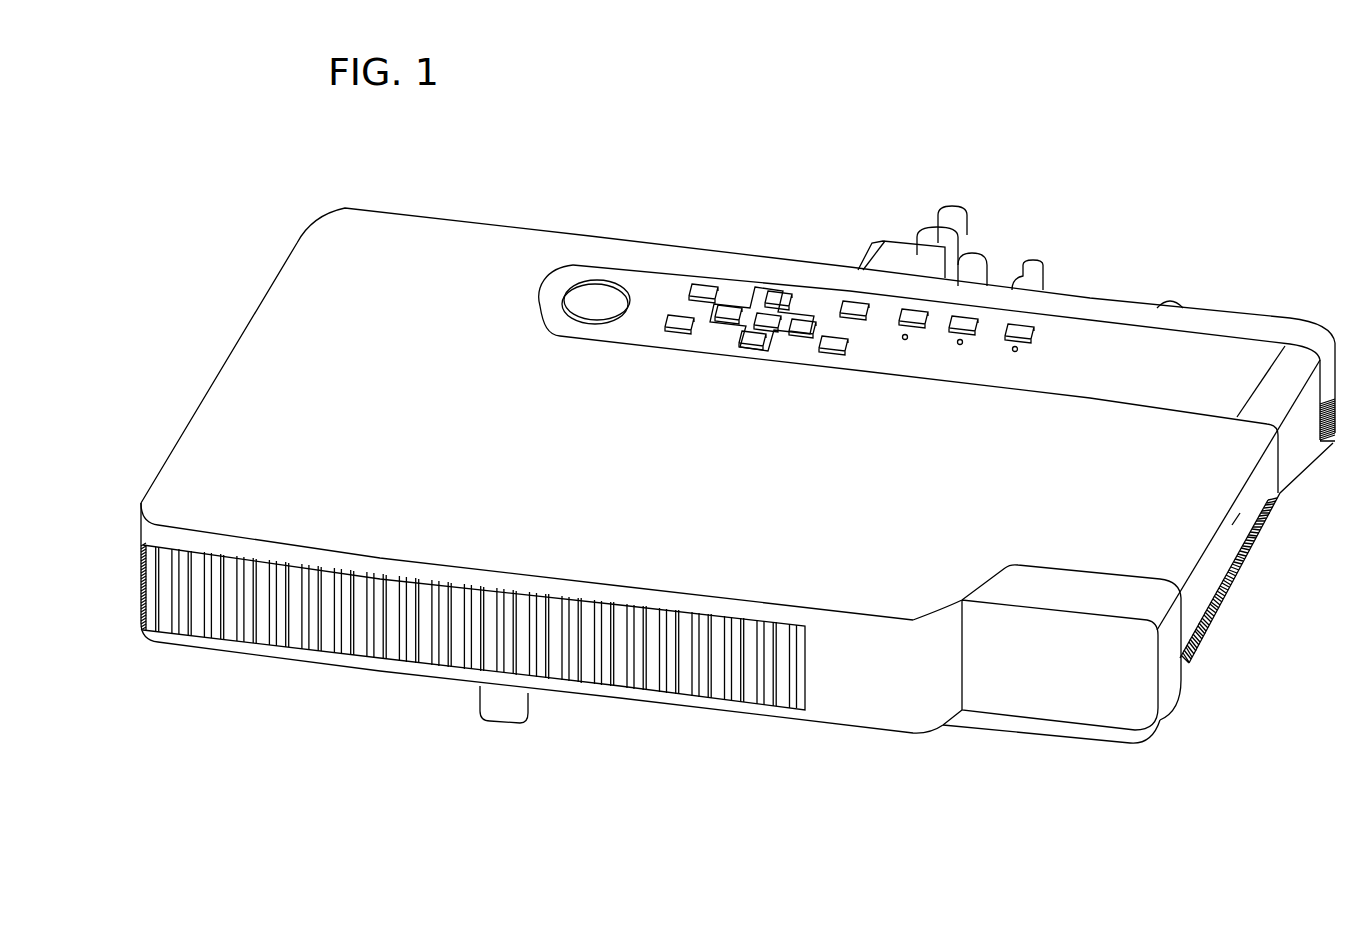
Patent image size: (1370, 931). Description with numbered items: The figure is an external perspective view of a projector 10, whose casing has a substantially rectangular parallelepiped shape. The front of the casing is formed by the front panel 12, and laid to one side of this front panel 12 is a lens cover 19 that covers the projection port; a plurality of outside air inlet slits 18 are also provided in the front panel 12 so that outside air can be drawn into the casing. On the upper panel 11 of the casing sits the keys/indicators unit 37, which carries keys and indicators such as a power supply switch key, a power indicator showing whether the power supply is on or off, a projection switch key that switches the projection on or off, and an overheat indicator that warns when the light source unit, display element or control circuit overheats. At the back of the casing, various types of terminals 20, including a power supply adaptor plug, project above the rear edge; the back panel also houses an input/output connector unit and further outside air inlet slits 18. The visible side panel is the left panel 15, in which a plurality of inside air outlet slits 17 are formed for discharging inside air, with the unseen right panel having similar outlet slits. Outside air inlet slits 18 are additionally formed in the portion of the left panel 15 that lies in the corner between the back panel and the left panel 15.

The projector 10 is at (697, 163).
The upper panel 11 is at (499, 238).
The front panel 12 is at (851, 685).
The left panel 15 is at (1235, 527).
The inside air outlet slits 17 is at (1222, 612).
The outside air inlet slits 18 is at (736, 684).
The lens cover 19 is at (1101, 697).
The terminals 20 is at (995, 205).
The keys/indicators unit 37 is at (785, 246).